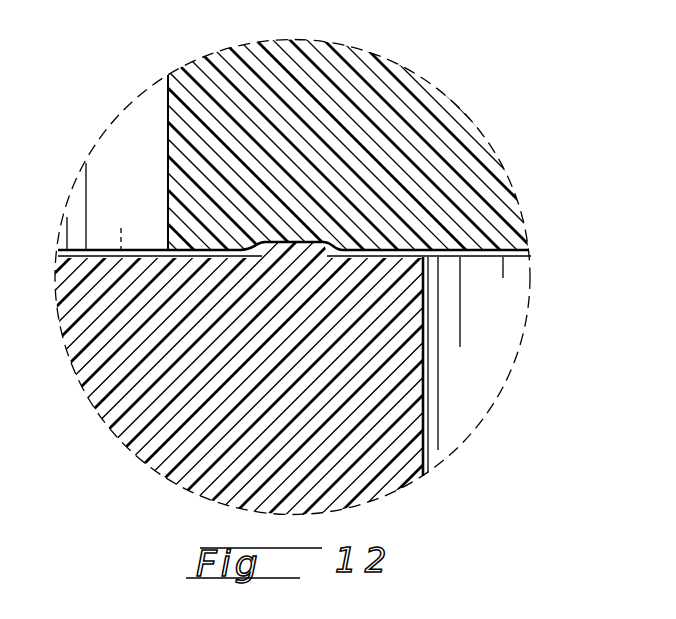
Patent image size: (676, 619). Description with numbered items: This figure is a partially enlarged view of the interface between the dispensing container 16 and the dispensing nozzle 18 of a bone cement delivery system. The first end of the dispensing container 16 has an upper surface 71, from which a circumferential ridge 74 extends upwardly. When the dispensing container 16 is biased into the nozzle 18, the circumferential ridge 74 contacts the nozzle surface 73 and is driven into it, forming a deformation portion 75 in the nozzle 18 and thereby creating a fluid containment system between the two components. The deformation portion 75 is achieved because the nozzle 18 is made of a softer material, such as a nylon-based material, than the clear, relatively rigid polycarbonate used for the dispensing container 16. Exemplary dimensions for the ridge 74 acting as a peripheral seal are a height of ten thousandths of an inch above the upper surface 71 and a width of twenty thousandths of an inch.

The dispensing container 16 is at (514, 402).
The dispensing nozzle 18 is at (516, 195).
The upper surface 71 is at (99, 256).
The nozzle surface 73 is at (473, 258).
The circumferential ridge 74 is at (281, 241).
The deformation portion 75 is at (334, 246).